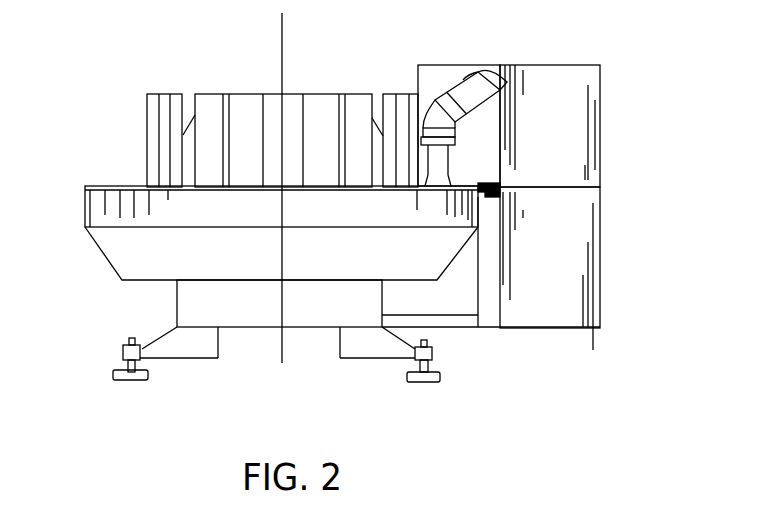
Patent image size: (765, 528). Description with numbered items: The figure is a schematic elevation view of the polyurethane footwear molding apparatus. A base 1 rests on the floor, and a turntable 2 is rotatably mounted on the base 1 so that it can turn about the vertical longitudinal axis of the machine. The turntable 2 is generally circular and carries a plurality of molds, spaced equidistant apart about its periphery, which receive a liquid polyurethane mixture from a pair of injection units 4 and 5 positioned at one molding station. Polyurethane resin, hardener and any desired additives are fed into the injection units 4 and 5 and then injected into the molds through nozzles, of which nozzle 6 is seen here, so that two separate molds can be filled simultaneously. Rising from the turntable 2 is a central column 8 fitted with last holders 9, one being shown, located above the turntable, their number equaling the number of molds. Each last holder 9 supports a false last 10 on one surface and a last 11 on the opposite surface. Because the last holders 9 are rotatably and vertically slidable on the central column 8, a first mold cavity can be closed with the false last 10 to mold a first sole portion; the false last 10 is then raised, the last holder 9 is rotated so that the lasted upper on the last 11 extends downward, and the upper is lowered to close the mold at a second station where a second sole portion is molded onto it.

The base 1 is at (193, 305).
The turntable 2 is at (128, 266).
The injection unit 4 is at (567, 257).
The injection unit 5 is at (428, 63).
The nozzle 6 is at (550, 126).
The central column 8 is at (248, 107).
The last holder 9 is at (423, 107).
The false last 10 is at (443, 187).
The last 11 is at (467, 80).